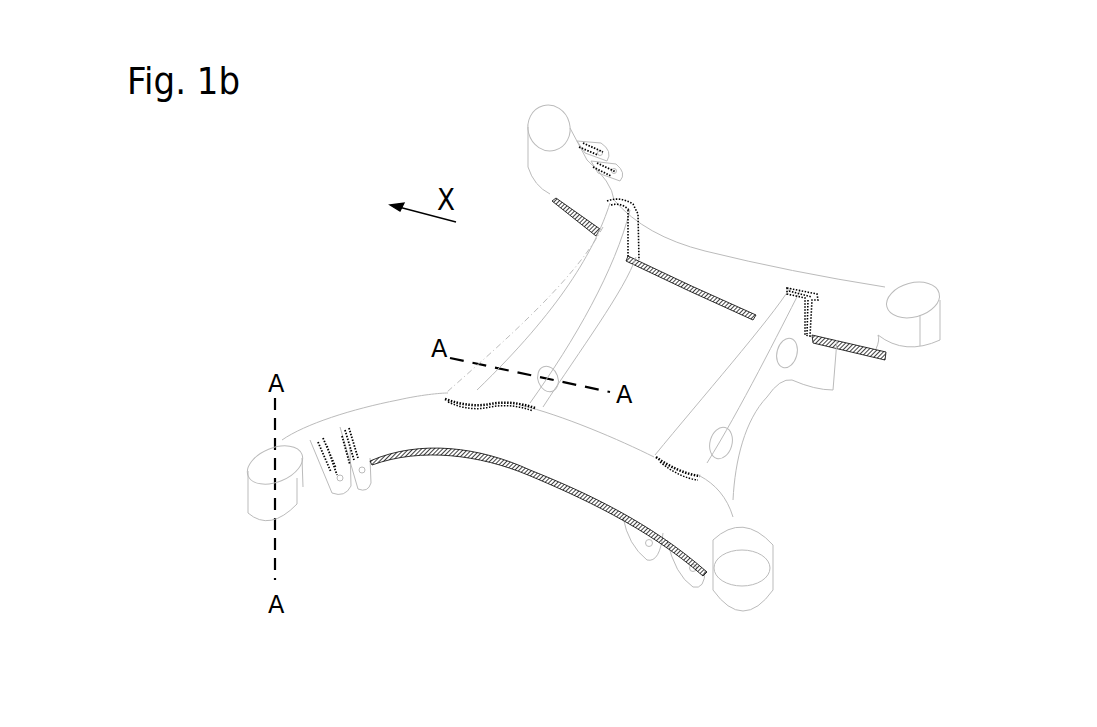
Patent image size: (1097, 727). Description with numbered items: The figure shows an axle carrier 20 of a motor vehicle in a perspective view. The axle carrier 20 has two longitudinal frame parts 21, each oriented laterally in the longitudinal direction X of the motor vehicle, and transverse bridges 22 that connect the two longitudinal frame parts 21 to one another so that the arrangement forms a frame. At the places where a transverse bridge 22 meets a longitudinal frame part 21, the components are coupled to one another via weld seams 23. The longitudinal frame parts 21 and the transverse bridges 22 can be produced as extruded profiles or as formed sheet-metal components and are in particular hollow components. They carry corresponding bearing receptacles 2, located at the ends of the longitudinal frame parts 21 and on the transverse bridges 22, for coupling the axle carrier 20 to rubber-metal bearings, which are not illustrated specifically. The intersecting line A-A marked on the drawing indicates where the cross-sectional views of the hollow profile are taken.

The bearing receptacle 2 is at (555, 121).
The axle carrier 20 is at (1001, 130).
The longitudinal frame part 21 is at (706, 258).
The transverse bridge 22 is at (563, 312).
The weld seam 23 is at (813, 317).